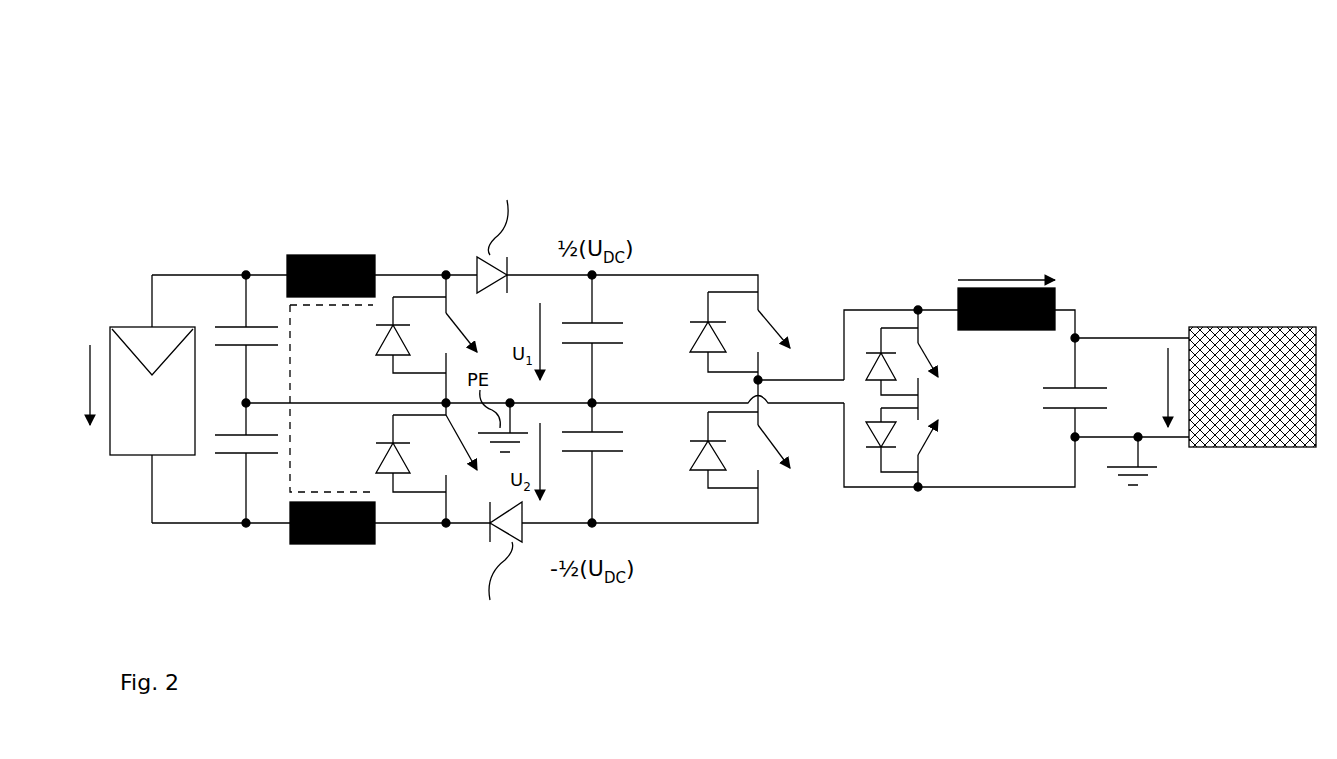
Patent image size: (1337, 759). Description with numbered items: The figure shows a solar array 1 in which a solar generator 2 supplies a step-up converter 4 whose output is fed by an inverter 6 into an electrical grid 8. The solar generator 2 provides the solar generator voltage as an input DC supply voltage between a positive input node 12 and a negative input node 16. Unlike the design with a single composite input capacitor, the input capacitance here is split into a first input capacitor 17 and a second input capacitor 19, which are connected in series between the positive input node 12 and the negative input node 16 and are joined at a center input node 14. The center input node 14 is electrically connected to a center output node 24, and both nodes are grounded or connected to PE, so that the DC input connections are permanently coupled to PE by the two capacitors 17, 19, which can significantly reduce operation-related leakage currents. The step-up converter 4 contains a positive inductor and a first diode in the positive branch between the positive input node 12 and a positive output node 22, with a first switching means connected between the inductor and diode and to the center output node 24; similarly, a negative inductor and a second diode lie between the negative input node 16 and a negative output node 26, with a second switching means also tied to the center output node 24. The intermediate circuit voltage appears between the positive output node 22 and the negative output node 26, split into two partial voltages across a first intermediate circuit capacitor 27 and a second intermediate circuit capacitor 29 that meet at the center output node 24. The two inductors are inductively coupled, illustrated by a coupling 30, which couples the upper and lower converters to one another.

The solar array 1 is at (623, 125).
The solar generator 2 is at (137, 340).
The step-up converter 4 is at (425, 222).
The inverter 6 is at (830, 217).
The electrical grid 8 is at (1233, 305).
The positive input node 12 is at (246, 275).
The center input node 14 is at (246, 403).
The negative input node 16 is at (246, 523).
The first input capacitor 17 is at (237, 333).
The second input capacitor 19 is at (228, 447).
The positive output node 22 is at (592, 275).
The center output node 24 is at (592, 403).
The negative output node 26 is at (592, 523).
The first intermediate circuit capacitor 27 is at (615, 337).
The second intermediate circuit capacitor 29 is at (607, 443).
The coupling 30 is at (288, 400).